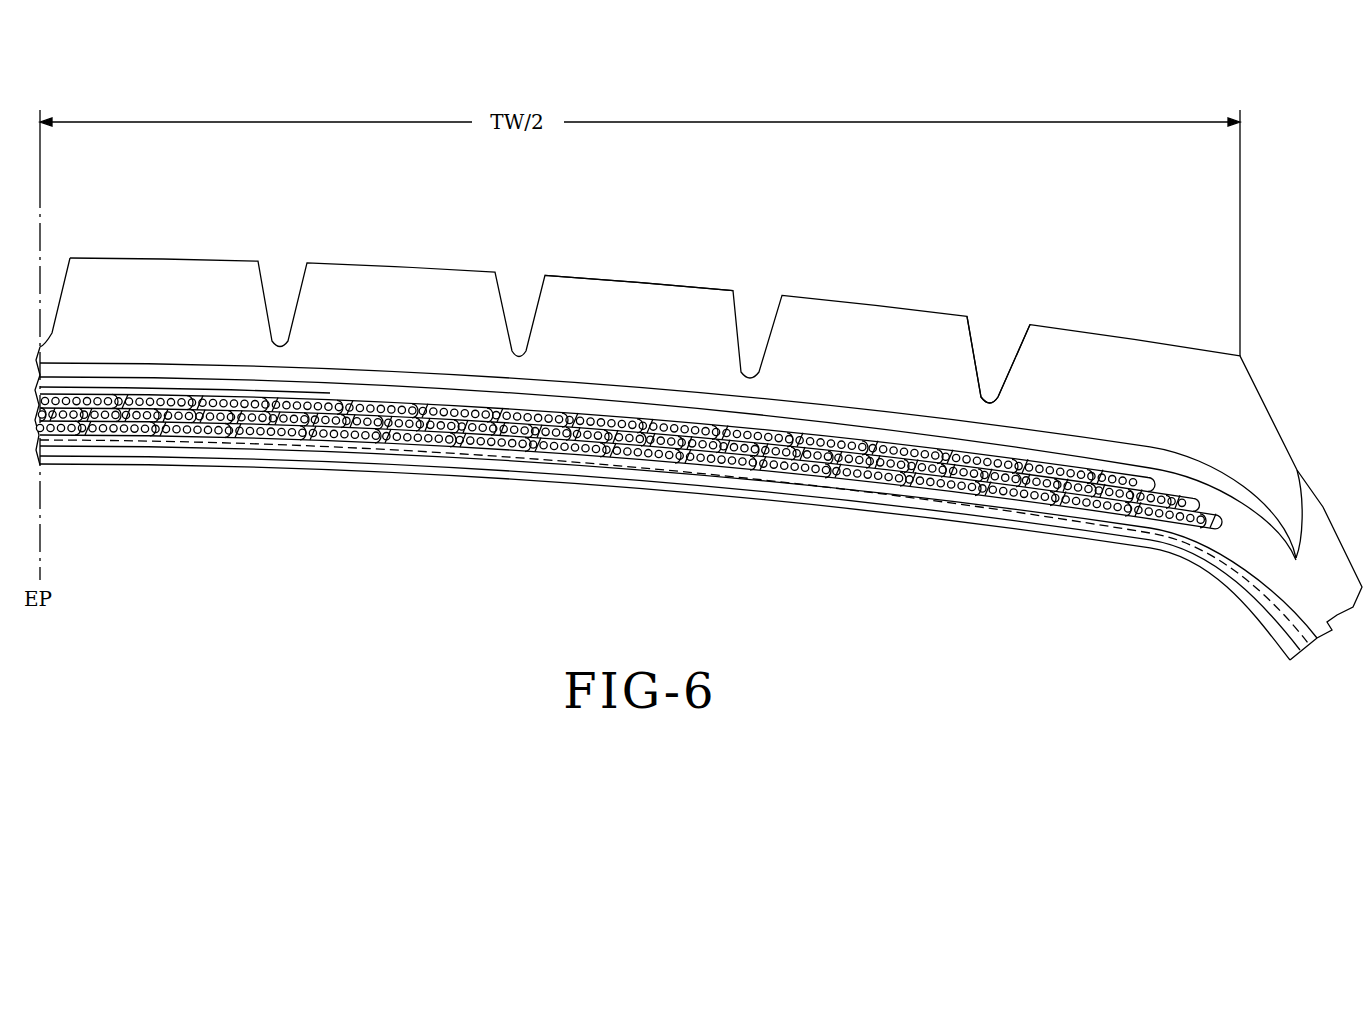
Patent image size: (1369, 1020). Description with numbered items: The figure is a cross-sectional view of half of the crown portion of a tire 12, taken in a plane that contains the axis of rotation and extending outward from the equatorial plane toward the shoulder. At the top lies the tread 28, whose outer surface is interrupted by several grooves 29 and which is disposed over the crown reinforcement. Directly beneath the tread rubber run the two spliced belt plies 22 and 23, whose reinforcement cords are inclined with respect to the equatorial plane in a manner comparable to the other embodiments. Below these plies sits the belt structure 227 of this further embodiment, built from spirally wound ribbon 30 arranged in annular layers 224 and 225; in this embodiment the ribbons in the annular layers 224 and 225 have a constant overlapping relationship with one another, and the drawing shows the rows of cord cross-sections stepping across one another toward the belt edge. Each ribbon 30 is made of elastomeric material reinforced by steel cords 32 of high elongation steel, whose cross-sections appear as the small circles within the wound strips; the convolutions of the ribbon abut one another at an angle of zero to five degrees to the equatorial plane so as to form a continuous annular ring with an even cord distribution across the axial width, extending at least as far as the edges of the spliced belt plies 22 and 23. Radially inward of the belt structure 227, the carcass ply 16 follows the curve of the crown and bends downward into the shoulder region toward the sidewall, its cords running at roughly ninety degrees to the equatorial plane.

The tire 12 is at (1290, 319).
The carcass ply 16 is at (1280, 612).
The belt ply 22 is at (205, 372).
The belt ply 23 is at (407, 393).
The tread 28 is at (595, 313).
The grooves 29 is at (993, 377).
The spirally wound ribbon 30 is at (1178, 487).
The steel cords 32 is at (1153, 510).
The annular layer 224 is at (167, 395).
The annular layer 225 is at (402, 437).
The belt structure 227 is at (255, 435).